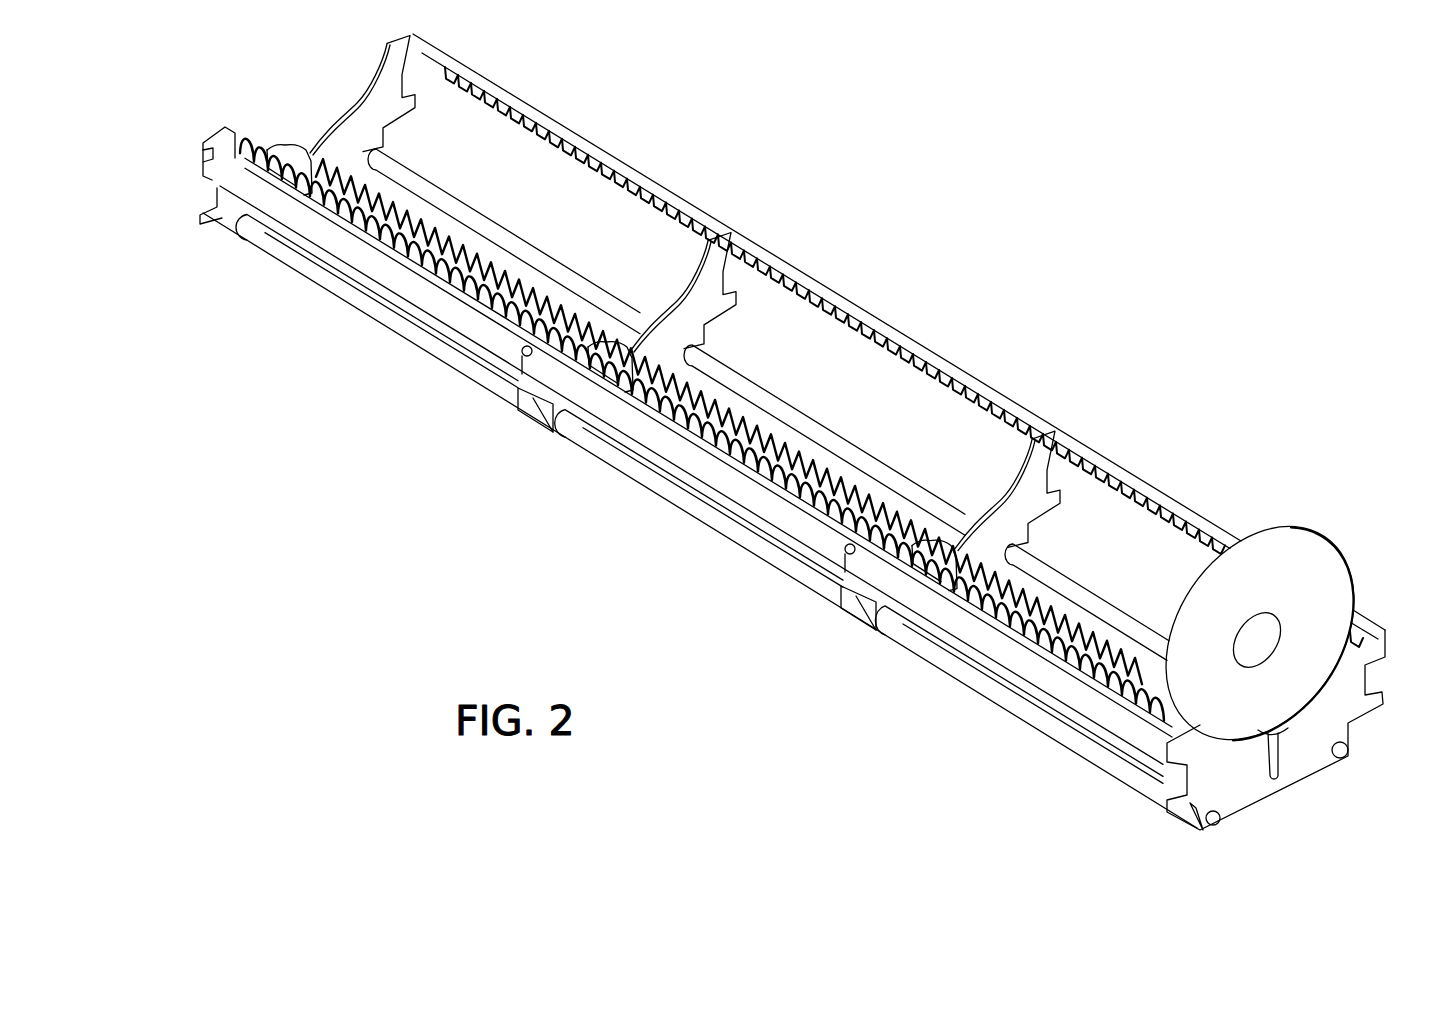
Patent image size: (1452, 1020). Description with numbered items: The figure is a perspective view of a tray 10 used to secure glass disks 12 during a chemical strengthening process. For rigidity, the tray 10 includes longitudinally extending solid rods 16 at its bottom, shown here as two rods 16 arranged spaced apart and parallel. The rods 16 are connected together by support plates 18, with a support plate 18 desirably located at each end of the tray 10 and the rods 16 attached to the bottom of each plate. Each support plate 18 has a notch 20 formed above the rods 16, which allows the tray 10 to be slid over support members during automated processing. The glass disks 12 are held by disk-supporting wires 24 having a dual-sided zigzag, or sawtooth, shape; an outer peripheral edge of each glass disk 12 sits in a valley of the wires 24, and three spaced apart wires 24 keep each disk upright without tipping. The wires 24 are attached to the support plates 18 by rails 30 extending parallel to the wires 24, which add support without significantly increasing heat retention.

The tray 10 is at (1118, 797).
The glass disk 12 is at (1322, 553).
The solid rod 16 is at (933, 652).
The support plate 18 is at (362, 116).
The notch 20 is at (1378, 672).
The wire 24 is at (927, 381).
The rail 30 is at (705, 463).